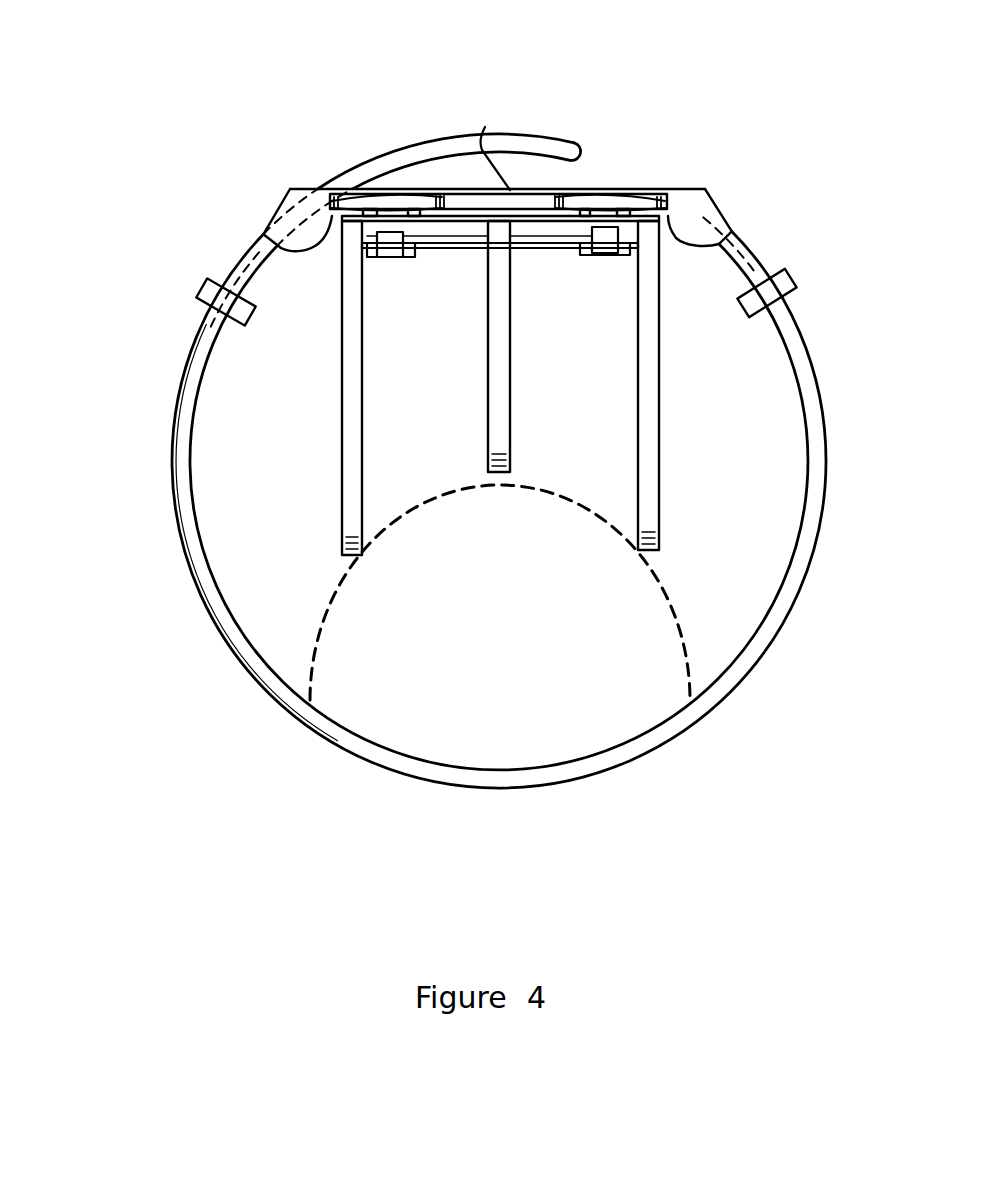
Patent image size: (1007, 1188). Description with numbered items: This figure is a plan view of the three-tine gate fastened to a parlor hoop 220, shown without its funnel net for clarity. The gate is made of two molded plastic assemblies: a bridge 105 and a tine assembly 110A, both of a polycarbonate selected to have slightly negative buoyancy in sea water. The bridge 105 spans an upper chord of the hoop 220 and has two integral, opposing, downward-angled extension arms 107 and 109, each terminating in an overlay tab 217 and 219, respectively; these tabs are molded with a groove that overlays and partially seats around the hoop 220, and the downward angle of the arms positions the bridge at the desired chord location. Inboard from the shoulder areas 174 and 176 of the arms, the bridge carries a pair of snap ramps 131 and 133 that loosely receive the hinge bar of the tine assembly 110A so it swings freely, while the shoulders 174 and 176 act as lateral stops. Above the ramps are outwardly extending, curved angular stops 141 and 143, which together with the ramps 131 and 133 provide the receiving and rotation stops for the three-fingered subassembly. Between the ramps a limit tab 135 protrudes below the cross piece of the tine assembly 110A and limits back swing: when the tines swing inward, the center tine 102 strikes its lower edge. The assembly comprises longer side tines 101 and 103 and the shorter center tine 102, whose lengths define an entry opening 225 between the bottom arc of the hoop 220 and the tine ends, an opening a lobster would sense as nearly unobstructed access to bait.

The side tine 101 is at (342, 447).
The center tine 102 is at (488, 419).
The side tine 103 is at (638, 453).
The bridge 105 is at (485, 127).
The extension arm 107 is at (247, 270).
The extension arm 109 is at (752, 252).
The tine assembly 110A is at (668, 504).
The snap ramp 131 is at (397, 258).
The snap ramp 133 is at (607, 254).
The limit tab 135 is at (522, 250).
The angular stop 141 is at (425, 196).
The angular stop 143 is at (628, 202).
The shoulder 174 is at (692, 220).
The shoulder 176 is at (313, 248).
The overlay tab 217 is at (198, 294).
The overlay tab 219 is at (780, 292).
The parlor hoop 220 is at (357, 182).
The entry opening 225 is at (462, 630).